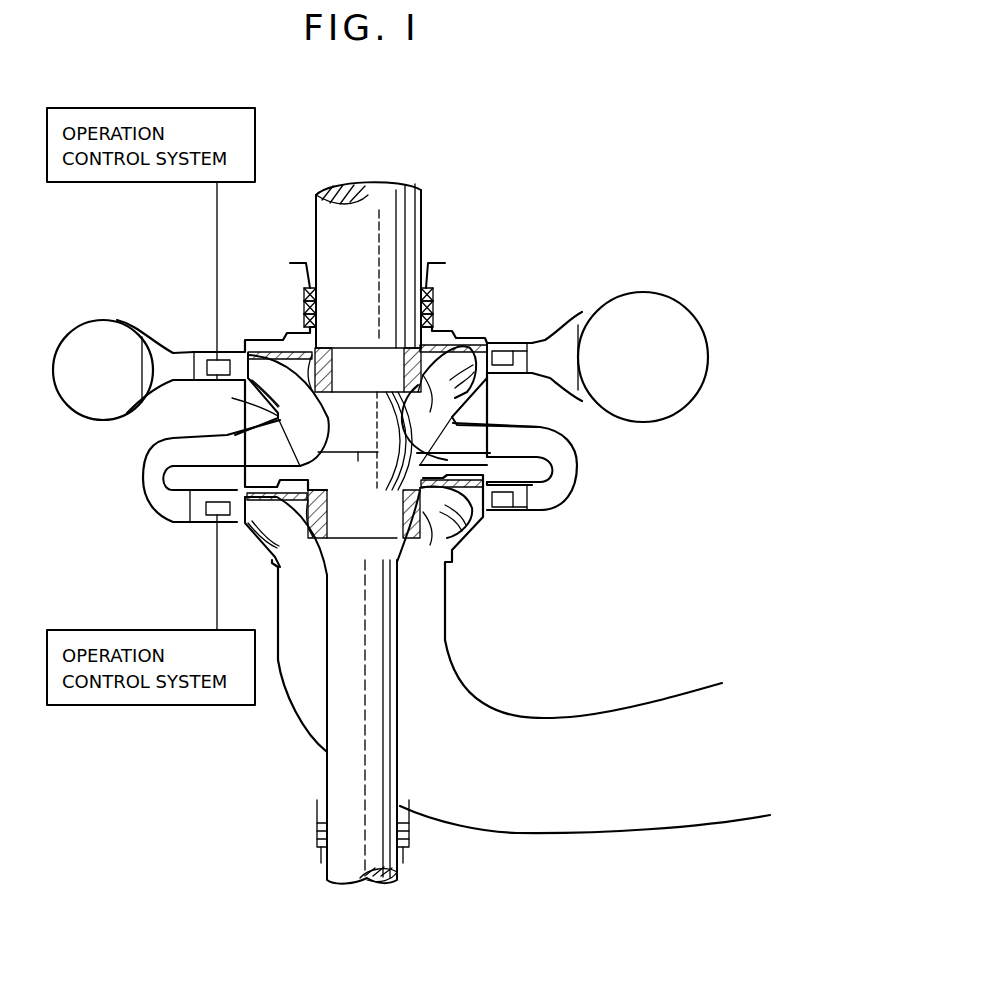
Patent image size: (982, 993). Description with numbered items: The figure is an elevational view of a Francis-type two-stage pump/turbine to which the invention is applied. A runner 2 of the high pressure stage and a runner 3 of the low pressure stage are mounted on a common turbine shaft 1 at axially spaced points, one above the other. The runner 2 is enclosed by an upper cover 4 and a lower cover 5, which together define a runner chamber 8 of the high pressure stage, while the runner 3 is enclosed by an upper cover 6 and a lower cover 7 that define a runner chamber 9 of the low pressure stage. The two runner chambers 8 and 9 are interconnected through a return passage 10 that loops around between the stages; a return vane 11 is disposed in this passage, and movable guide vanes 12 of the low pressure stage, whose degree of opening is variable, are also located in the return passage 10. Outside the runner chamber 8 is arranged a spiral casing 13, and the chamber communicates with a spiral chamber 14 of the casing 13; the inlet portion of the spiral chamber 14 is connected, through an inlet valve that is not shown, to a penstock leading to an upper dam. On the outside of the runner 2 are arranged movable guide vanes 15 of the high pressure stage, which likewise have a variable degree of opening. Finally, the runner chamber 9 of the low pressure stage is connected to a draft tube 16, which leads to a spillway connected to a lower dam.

The turbine shaft 1 is at (407, 202).
The runner 2 is at (437, 388).
The runner 3 is at (437, 525).
The upper cover 4 is at (258, 340).
The lower cover 5 is at (248, 398).
The upper cover 6 is at (307, 455).
The lower cover 7 is at (253, 545).
The runner chamber 8 is at (462, 393).
The runner chamber 9 is at (463, 522).
The return passage 10 is at (565, 492).
The return vane 11 is at (570, 473).
The movable guide vanes 12 is at (510, 507).
The spiral casing 13 is at (703, 362).
The spiral chamber 14 is at (683, 323).
The movable guide vanes 15 is at (513, 360).
The draft tube 16 is at (487, 698).